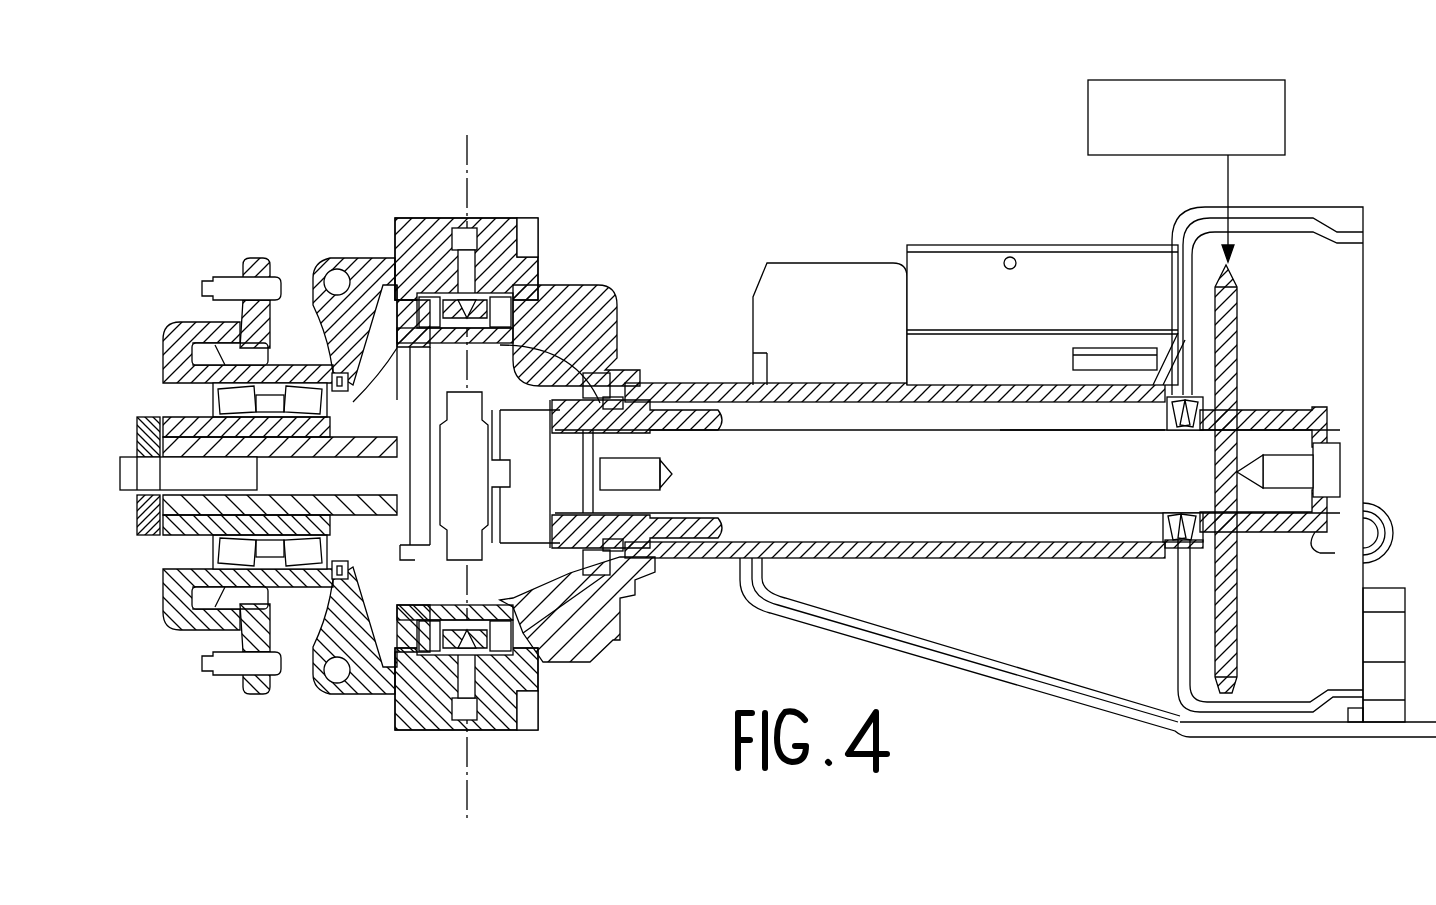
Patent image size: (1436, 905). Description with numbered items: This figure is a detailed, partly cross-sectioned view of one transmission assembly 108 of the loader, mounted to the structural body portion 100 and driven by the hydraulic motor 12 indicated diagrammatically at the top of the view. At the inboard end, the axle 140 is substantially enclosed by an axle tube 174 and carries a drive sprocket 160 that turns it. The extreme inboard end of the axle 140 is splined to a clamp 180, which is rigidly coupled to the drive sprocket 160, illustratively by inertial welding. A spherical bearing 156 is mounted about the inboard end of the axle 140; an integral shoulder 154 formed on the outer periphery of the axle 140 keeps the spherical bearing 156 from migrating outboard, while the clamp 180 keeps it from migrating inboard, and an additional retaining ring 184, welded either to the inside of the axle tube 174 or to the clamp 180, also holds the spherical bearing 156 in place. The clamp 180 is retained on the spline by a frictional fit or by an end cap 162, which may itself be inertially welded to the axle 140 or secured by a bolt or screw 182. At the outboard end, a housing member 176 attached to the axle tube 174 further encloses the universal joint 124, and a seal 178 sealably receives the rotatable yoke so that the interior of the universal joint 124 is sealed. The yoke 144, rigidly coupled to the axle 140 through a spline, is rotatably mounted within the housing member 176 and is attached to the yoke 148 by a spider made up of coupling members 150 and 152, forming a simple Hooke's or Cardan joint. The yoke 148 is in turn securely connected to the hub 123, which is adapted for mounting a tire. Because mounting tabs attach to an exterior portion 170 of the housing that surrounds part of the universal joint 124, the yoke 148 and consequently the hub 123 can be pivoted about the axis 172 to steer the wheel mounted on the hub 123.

The hydraulic motor 12 is at (1287, 92).
The structural body portion 100 is at (765, 378).
The transmission assembly 108 is at (838, 152).
The hub 123 is at (252, 258).
The universal joint 124 is at (492, 196).
The axle 140 is at (995, 514).
The yoke 144 is at (682, 402).
The yoke 148 is at (300, 477).
The coupling member 150 is at (487, 380).
The coupling member 152 is at (313, 300).
The shoulder 154 is at (1165, 418).
The spherical bearing 156 is at (1205, 420).
The drive sprocket 160 is at (1238, 645).
The end cap 162 is at (1318, 533).
The exterior portion of housing 170 is at (352, 257).
The axis 172 is at (467, 172).
The axle tube 174 is at (692, 560).
The housing member 176 is at (618, 625).
The seal 178 is at (612, 372).
The clamp 180 is at (1275, 410).
The bolt or screw 182 is at (1340, 462).
The retaining ring 184 is at (1207, 537).